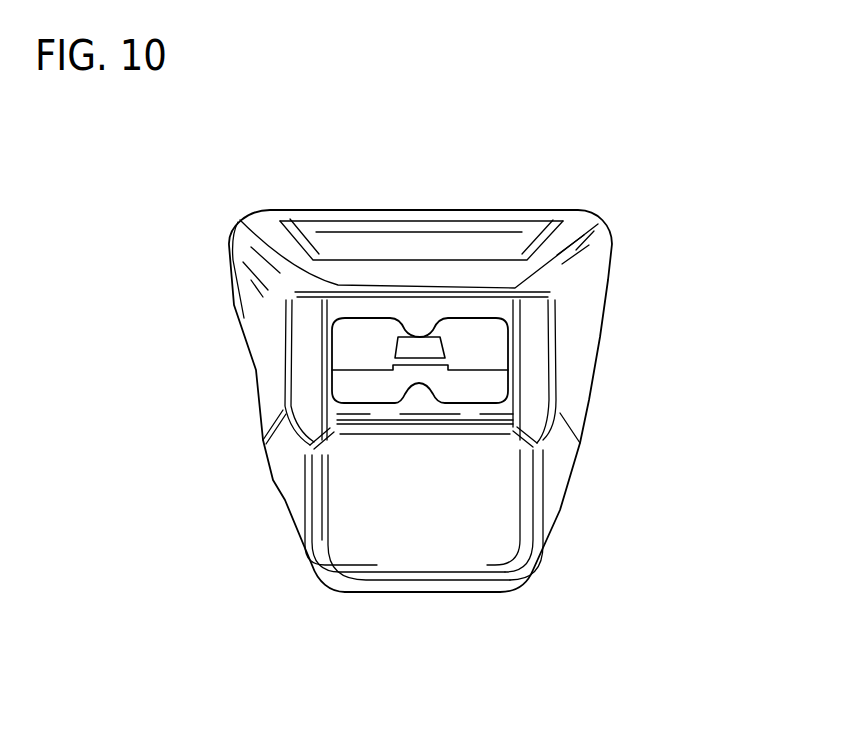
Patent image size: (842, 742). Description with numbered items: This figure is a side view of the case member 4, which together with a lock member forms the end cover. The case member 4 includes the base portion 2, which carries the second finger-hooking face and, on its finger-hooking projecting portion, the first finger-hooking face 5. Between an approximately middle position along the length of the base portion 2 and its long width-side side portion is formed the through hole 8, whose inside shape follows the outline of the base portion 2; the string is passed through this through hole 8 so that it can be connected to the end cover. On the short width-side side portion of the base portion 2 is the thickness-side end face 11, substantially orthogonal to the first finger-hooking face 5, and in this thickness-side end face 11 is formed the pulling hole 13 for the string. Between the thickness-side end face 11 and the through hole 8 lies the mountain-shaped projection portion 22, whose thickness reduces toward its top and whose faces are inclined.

The base portion 2 is at (603, 276).
The case member 4 is at (554, 190).
The first finger-hooking face 5 is at (422, 497).
The through hole 8 is at (422, 248).
The thickness-side end face 11 is at (535, 367).
The pulling hole 13 is at (340, 348).
The projection portion 22 is at (488, 593).